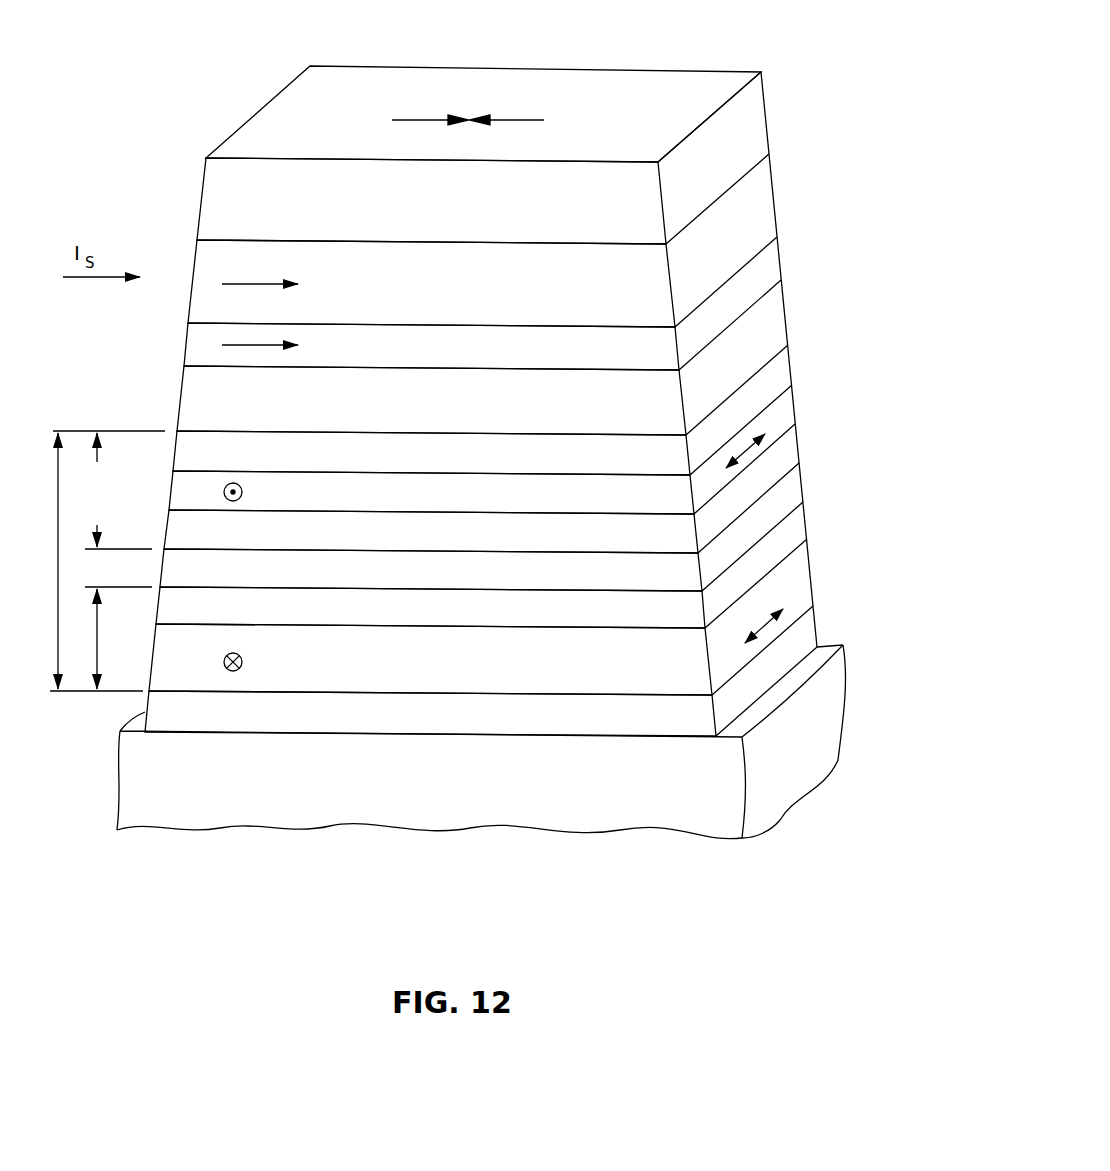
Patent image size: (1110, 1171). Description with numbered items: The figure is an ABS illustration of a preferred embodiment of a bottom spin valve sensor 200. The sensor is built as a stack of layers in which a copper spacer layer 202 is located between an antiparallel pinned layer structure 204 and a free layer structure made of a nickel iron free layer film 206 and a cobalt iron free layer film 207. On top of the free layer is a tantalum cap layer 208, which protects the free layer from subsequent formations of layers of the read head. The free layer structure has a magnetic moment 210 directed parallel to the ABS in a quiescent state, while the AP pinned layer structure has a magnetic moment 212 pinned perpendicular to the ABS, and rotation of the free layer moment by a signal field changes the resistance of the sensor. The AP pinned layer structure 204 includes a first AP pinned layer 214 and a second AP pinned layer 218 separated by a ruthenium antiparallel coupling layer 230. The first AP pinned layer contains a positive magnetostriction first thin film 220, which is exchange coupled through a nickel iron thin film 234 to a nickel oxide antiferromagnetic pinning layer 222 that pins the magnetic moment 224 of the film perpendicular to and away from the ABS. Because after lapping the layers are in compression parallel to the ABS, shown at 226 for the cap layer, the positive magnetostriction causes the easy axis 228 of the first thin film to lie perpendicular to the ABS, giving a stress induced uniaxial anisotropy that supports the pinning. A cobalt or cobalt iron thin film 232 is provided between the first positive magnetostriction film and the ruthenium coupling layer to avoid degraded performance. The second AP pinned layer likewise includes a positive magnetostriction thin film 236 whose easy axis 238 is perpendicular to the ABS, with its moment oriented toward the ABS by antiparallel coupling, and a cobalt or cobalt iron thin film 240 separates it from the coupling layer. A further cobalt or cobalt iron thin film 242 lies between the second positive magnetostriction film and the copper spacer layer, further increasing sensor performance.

The spin valve sensor 200 is at (668, 52).
The cap layer 208 is at (757, 120).
The free layer film 206 is at (763, 221).
The free layer film 207 is at (768, 266).
The spacer layer 202 is at (777, 316).
The thin film 242 is at (782, 376).
The positive magnetostriction thin film 236 is at (788, 415).
The thin film of cobalt or cobalt iron 240 is at (790, 445).
The easy axis 238 is at (750, 457).
The antiparallel coupling layer 230 is at (793, 498).
The thin film 232 is at (795, 533).
The first thin film 220 is at (803, 586).
The nickel iron thin film 234 is at (808, 635).
The easy axis 228 is at (763, 632).
The antiferromagnetic pinning layer 222 is at (783, 790).
The magnetic moment 210 is at (247, 283).
The magnetic moment 212 is at (233, 483).
The magnetic moment 224 is at (235, 671).
The compression 226 is at (527, 121).
The second AP pinned layer 218 is at (109, 490).
The first AP pinned layer 214 is at (97, 689).
The AP pinned layer structure 204 is at (58, 689).